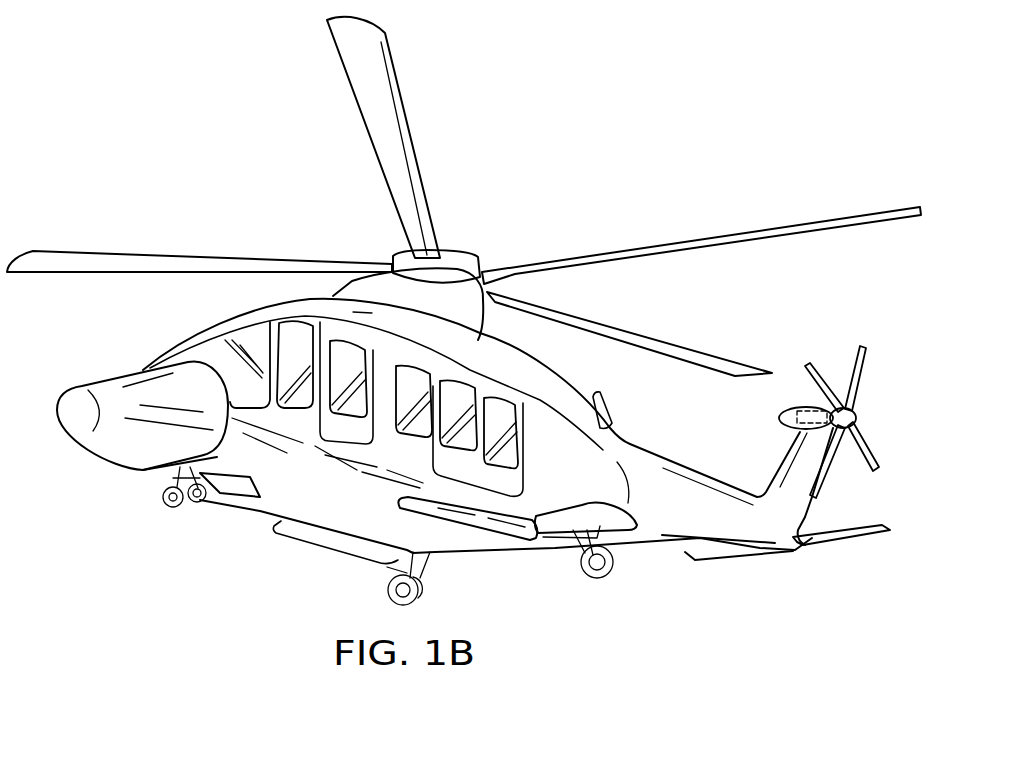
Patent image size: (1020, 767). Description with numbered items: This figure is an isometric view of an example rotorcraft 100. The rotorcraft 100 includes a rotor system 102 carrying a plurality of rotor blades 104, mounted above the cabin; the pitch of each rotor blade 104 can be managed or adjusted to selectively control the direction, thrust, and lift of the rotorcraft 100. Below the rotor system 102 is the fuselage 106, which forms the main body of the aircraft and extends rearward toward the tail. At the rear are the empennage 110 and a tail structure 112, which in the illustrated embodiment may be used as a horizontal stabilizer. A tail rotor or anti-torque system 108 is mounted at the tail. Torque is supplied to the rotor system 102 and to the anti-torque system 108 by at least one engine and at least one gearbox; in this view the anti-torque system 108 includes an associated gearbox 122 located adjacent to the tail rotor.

The rotorcraft 100 is at (208, 76).
The rotor system 102 is at (327, 193).
The rotor blade 104 is at (688, 252).
The fuselage 106 is at (268, 508).
The tail rotor or anti-torque system 108 is at (846, 329).
The empennage 110 is at (660, 543).
The tail structure 112 is at (850, 543).
The gearbox 122 is at (780, 420).